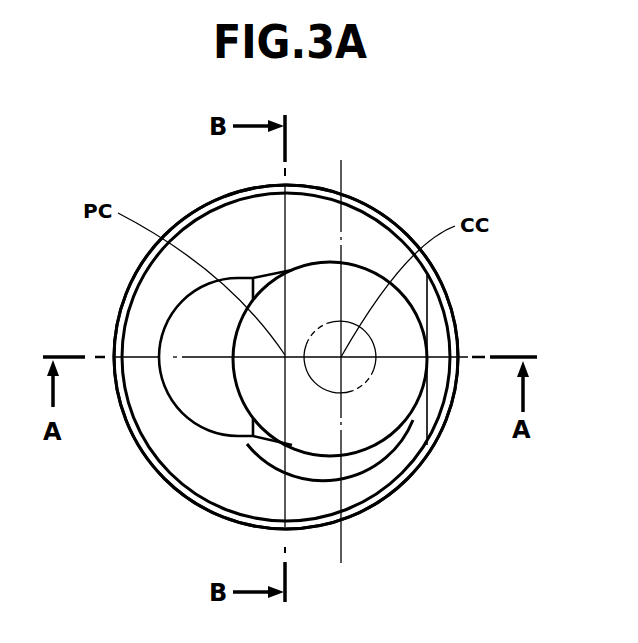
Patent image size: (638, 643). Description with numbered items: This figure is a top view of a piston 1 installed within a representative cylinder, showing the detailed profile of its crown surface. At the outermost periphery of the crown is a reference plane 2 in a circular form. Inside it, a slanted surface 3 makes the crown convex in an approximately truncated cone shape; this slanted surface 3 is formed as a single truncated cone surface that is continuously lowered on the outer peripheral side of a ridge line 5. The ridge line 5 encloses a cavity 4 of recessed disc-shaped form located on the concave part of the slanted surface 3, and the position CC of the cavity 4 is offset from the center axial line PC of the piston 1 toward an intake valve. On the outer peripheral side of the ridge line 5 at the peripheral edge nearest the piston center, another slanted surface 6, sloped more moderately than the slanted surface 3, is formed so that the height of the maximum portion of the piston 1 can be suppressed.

The piston 1 is at (372, 185).
The reference plane 2 is at (148, 465).
The slanted surface 3 is at (227, 482).
The cavity 4 is at (375, 425).
The ridge line 5 is at (352, 453).
The another slanted surface 6 is at (185, 336).